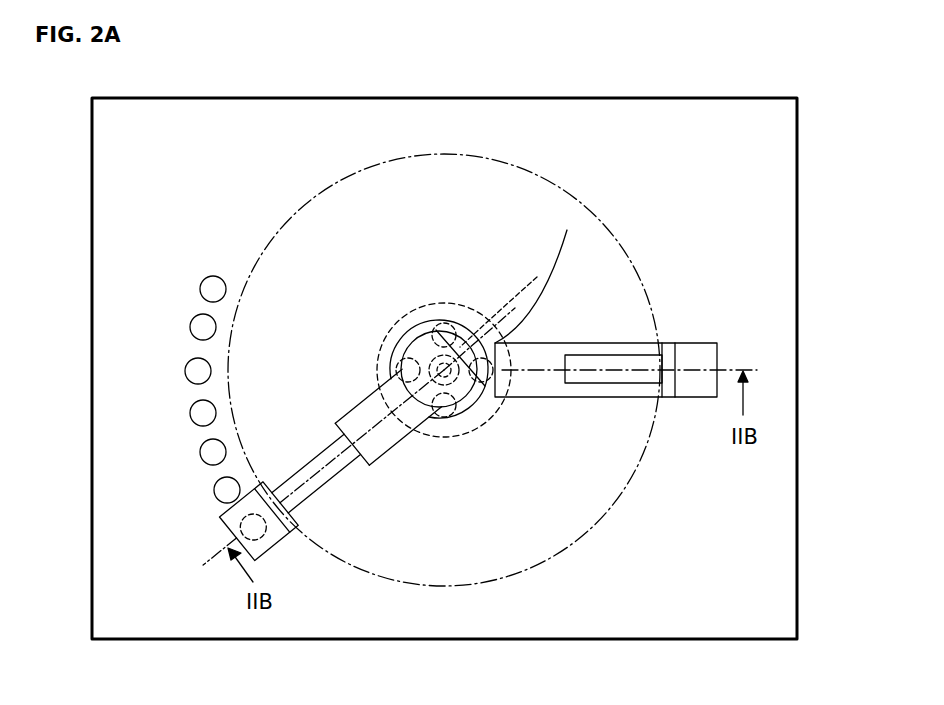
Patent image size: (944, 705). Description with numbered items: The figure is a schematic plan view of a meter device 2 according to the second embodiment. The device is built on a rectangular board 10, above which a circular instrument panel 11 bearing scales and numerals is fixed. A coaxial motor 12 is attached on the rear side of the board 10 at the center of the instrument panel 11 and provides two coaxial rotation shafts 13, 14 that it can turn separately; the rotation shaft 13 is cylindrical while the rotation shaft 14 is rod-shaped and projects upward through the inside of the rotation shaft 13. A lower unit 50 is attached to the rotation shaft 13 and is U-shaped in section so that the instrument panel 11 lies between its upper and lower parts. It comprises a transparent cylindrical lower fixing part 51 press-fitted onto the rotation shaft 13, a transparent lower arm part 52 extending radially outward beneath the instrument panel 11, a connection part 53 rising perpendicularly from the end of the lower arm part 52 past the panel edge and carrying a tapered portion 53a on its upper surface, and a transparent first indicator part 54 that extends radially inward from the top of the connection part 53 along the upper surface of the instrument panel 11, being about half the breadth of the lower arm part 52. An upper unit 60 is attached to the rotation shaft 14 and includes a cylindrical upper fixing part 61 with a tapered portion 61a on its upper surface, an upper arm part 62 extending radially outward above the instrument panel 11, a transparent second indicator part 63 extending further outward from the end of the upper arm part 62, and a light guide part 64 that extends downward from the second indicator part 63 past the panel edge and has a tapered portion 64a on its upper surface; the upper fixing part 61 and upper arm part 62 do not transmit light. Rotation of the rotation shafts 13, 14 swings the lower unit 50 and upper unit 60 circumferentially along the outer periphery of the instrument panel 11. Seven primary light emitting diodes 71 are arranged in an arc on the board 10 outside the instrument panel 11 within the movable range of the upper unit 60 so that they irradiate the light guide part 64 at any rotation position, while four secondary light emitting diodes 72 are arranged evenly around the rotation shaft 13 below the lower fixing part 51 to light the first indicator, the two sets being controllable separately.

The meter device 2 is at (483, 655).
The board 10 is at (538, 641).
The instrument panel 11 is at (580, 537).
The coaxial motor 12 is at (457, 300).
The rotation shaft 13 is at (509, 297).
The rotation shaft 14 is at (452, 395).
The lower unit 50 is at (643, 343).
The lower fixing part 51 is at (423, 312).
The lower arm part 52 is at (600, 343).
The connection part 53 is at (727, 341).
The tapered portion 53a is at (702, 362).
The first indicator part 54 is at (597, 383).
The upper unit 60 is at (401, 411).
The upper fixing part 61 is at (396, 328).
The tapered portion 61a is at (539, 276).
The upper arm part 62 is at (368, 393).
The second indicator part 63 is at (333, 480).
The light guide part 64 is at (279, 548).
The tapered portion 64a is at (262, 553).
The primary light emitting diodes 71 is at (200, 289).
The secondary light emitting diodes 72 is at (380, 350).